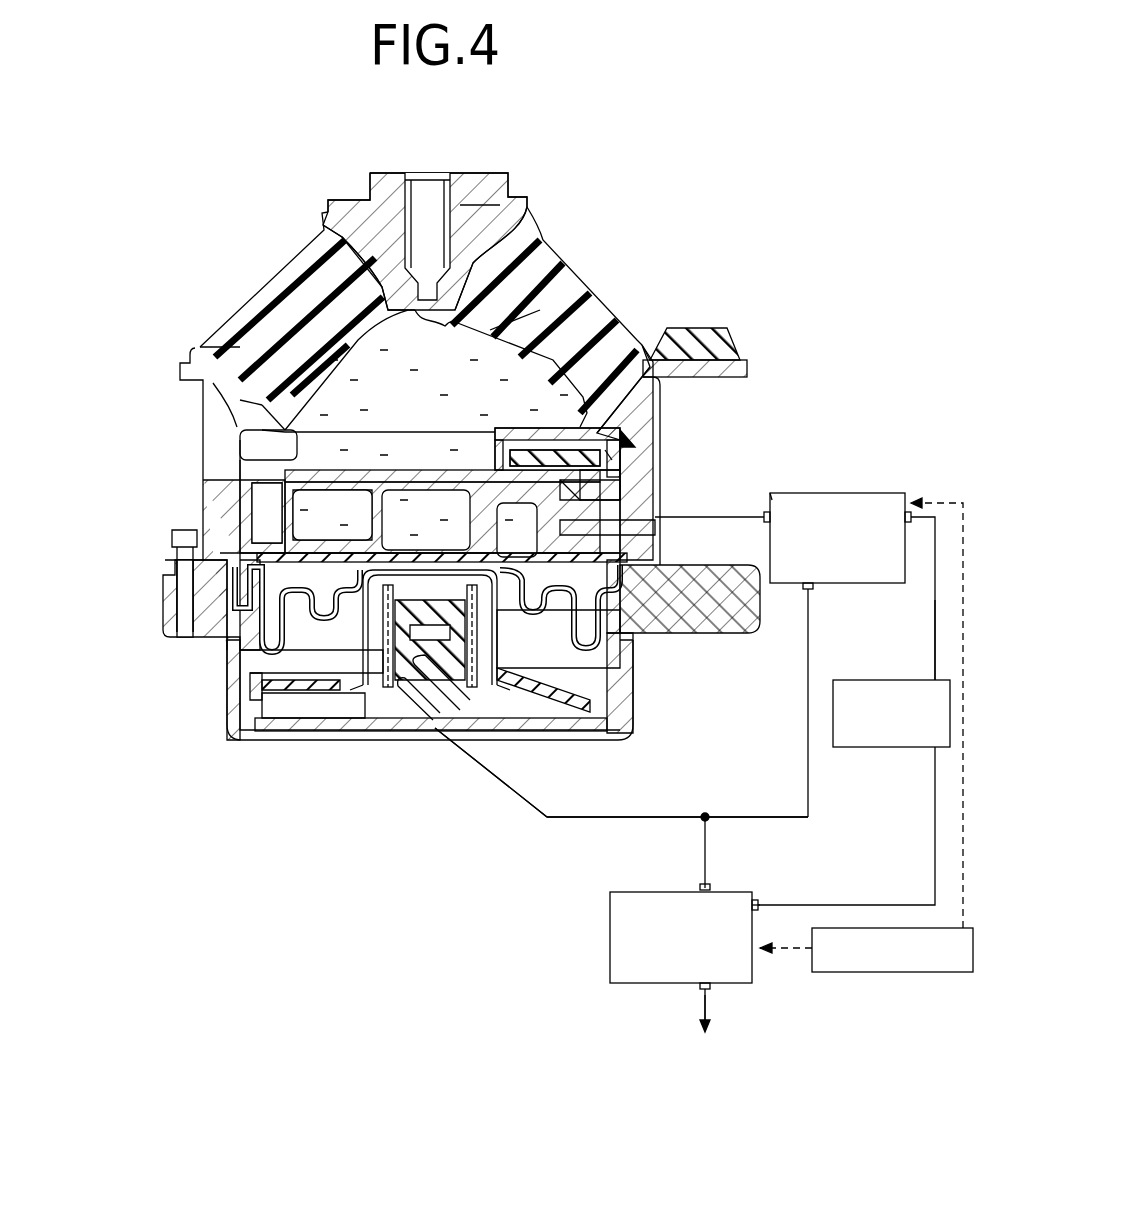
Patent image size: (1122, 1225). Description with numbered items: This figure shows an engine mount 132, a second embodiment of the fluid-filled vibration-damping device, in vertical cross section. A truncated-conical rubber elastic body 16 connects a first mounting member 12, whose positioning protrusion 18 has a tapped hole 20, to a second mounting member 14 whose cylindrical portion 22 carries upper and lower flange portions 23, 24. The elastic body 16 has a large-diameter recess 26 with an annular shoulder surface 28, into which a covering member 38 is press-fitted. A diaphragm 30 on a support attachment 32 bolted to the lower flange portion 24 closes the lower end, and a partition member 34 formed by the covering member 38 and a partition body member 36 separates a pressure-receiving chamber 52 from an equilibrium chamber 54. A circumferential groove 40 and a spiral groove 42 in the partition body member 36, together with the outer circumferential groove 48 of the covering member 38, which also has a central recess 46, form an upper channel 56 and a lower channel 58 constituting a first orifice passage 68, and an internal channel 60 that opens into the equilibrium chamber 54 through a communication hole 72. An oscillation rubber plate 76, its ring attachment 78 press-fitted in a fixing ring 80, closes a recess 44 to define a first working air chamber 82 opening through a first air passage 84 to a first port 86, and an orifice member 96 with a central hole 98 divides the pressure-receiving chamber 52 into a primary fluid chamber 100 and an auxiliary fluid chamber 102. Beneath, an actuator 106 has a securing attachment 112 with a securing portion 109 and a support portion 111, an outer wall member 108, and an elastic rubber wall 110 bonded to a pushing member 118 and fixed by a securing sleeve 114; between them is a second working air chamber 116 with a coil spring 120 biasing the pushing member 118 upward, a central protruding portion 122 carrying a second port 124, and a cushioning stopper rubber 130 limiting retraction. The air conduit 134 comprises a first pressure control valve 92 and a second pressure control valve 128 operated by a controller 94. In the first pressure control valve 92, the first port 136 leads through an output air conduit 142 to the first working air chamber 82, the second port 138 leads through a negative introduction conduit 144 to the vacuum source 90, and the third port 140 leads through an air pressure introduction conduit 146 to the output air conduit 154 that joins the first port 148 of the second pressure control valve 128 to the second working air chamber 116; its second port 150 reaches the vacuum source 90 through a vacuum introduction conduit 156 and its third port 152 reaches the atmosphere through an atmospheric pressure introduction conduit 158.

The first mounting member 12 is at (520, 205).
The second mounting member 14 is at (658, 440).
The elastic body 16 is at (566, 270).
The positioning protrusion 18 is at (490, 200).
The tapped hole 20 is at (418, 175).
The cylindrical portion 22 is at (215, 378).
The upper flange portion 23 is at (745, 368).
The lower flange portion 24 is at (176, 560).
The large-diameter recess 26 is at (352, 345).
The annular shoulder surface 28 is at (246, 402).
The diaphragm 30 is at (258, 638).
The support attachment 32 is at (172, 585).
The partition member 34 is at (632, 478).
The partition body member 36 is at (213, 513).
The covering member 38 is at (280, 400).
The circumferential groove 40 is at (262, 516).
The spiral groove 42 is at (312, 485).
The recess 44 is at (592, 470).
The central recess 46 is at (290, 425).
The outer circumferential groove 48 is at (266, 490).
The pressure-receiving chamber 52 is at (452, 370).
The equilibrium chamber 54 is at (598, 588).
The upper channel 56 is at (244, 410).
The lower channel 58 is at (252, 428).
The internal channel 60 is at (385, 485).
The first orifice passage 68 is at (140, 402).
The communication hole 72 is at (470, 478).
The oscillation rubber plate 76 is at (580, 500).
The ring attachment 78 is at (612, 492).
The fixing ring 80 is at (612, 468).
The first working air chamber 82 is at (625, 575).
The first air passage 84 is at (705, 600).
The first port 86 is at (632, 532).
The vacuum source 90 is at (858, 680).
The first pressure control valve 92 is at (890, 495).
The controller 94 is at (858, 974).
The orifice member 96 is at (506, 452).
The central hole 98 is at (598, 440).
The primary fluid chamber 100 is at (524, 335).
The auxiliary fluid chamber 102 is at (546, 458).
The actuator 106 is at (320, 744).
The outer wall member 108 is at (340, 738).
The securing portion 109 is at (705, 610).
The elastic rubber wall 110 is at (565, 686).
The support portion 111 is at (575, 735).
The securing attachment 112 is at (623, 718).
The securing sleeve 114 is at (255, 682).
The second working air chamber 116 is at (350, 706).
The pushing member 118 is at (395, 690).
The coil spring 120 is at (428, 672).
The central protruding portion 122 is at (468, 690).
The second port 124 is at (440, 712).
The second pressure control valve 128 is at (732, 895).
The cushioning stopper rubber 130 is at (380, 640).
The engine mount 132 is at (582, 220).
The air conduit 134 is at (940, 520).
The first port 136 is at (775, 495).
The second port 138 is at (930, 540).
The third port 140 is at (806, 600).
The output air conduit 142 is at (742, 500).
The negative introduction conduit 144 is at (935, 640).
The air pressure introduction conduit 146 is at (745, 816).
The first port 148 is at (700, 886).
The second port 150 is at (760, 900).
The third port 152 is at (700, 988).
The output air conduit 154 is at (552, 822).
The vacuum introduction conduit 156 is at (805, 900).
The atmospheric pressure introduction conduit 158 is at (710, 992).